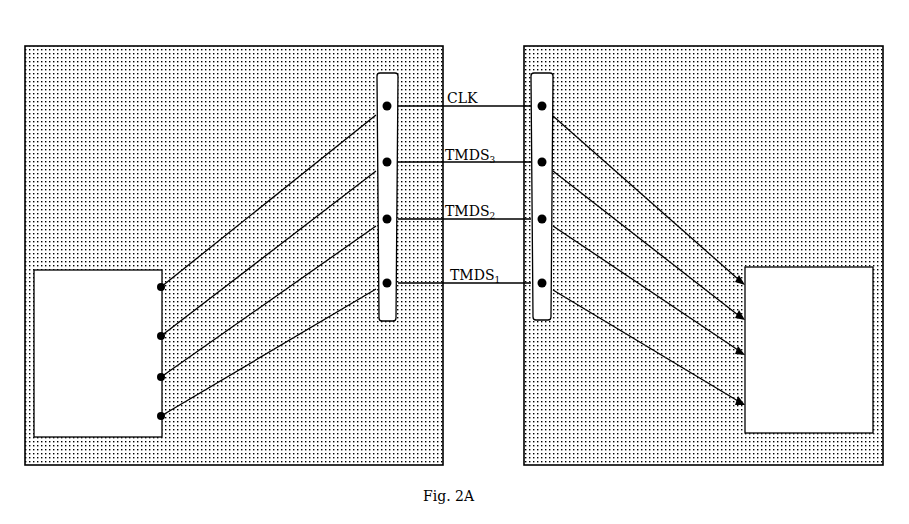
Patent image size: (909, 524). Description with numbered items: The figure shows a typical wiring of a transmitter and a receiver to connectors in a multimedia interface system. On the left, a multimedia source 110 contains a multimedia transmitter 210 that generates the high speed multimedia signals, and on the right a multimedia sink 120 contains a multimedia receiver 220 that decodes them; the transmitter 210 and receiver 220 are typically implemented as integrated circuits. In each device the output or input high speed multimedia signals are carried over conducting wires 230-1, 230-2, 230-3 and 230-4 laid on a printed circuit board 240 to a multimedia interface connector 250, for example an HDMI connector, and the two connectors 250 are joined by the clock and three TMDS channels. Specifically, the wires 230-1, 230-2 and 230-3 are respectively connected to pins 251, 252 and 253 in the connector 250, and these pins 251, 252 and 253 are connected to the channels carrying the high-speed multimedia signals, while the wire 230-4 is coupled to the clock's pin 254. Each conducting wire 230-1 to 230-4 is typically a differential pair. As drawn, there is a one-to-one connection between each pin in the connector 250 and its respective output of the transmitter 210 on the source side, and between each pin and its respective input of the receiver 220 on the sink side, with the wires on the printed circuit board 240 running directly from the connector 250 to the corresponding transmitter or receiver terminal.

The multimedia source 110 is at (308, 46).
The multimedia sink 120 is at (748, 46).
The printed circuit board 240 is at (442, 111).
The multimedia transmitter 210 is at (97, 270).
The multimedia receiver 220 is at (772, 267).
The multimedia interface connector 250 is at (390, 87).
The pin 251 is at (390, 282).
The pin 252 is at (390, 218).
The pin 253 is at (390, 162).
The clock's pin 254 is at (400, 103).
The conducting wire 230-1 is at (265, 355).
The conducting wire 230-2 is at (335, 255).
The conducting wire 230-3 is at (363, 200).
The conducting wire 230-4 is at (335, 148).